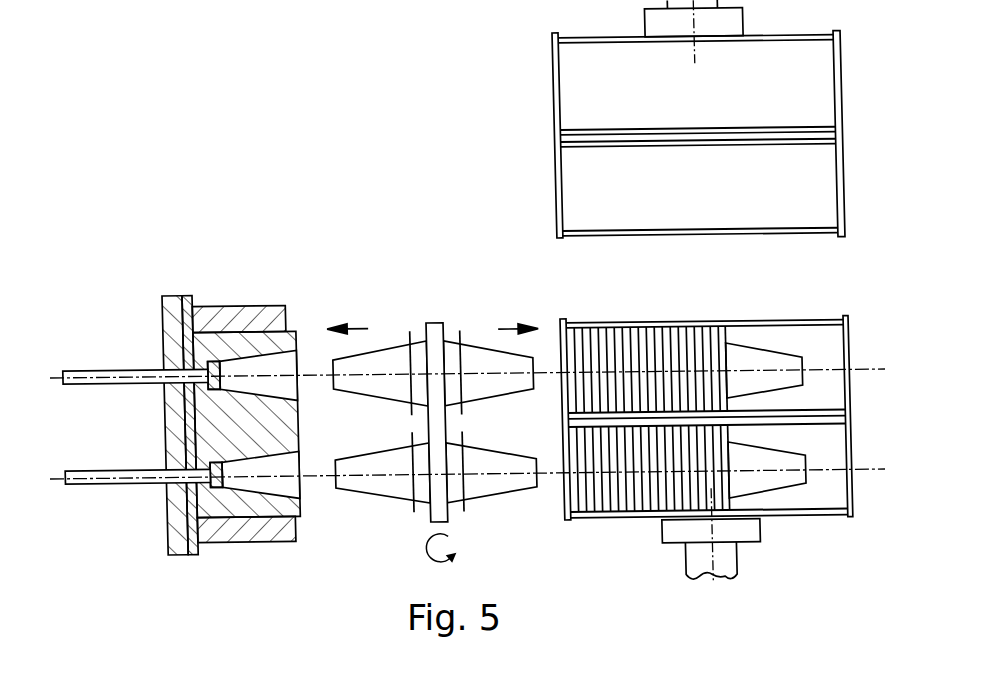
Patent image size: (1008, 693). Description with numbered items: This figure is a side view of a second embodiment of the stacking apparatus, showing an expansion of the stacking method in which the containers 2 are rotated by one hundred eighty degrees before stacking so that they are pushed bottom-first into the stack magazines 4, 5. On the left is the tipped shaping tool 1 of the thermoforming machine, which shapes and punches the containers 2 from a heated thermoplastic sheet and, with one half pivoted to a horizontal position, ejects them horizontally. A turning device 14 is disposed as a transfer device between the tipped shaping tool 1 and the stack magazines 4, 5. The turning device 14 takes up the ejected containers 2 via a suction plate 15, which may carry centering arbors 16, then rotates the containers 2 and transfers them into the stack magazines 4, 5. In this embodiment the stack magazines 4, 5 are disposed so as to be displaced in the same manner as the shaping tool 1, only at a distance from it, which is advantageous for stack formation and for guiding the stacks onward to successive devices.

The shaping tool 1 is at (229, 546).
The containers 2 is at (355, 494).
The stack magazine 4 is at (848, 352).
The stack magazine 5 is at (842, 171).
The turning device 14 is at (428, 302).
The suction plate 15 is at (428, 517).
The centering arbors 16 is at (449, 492).